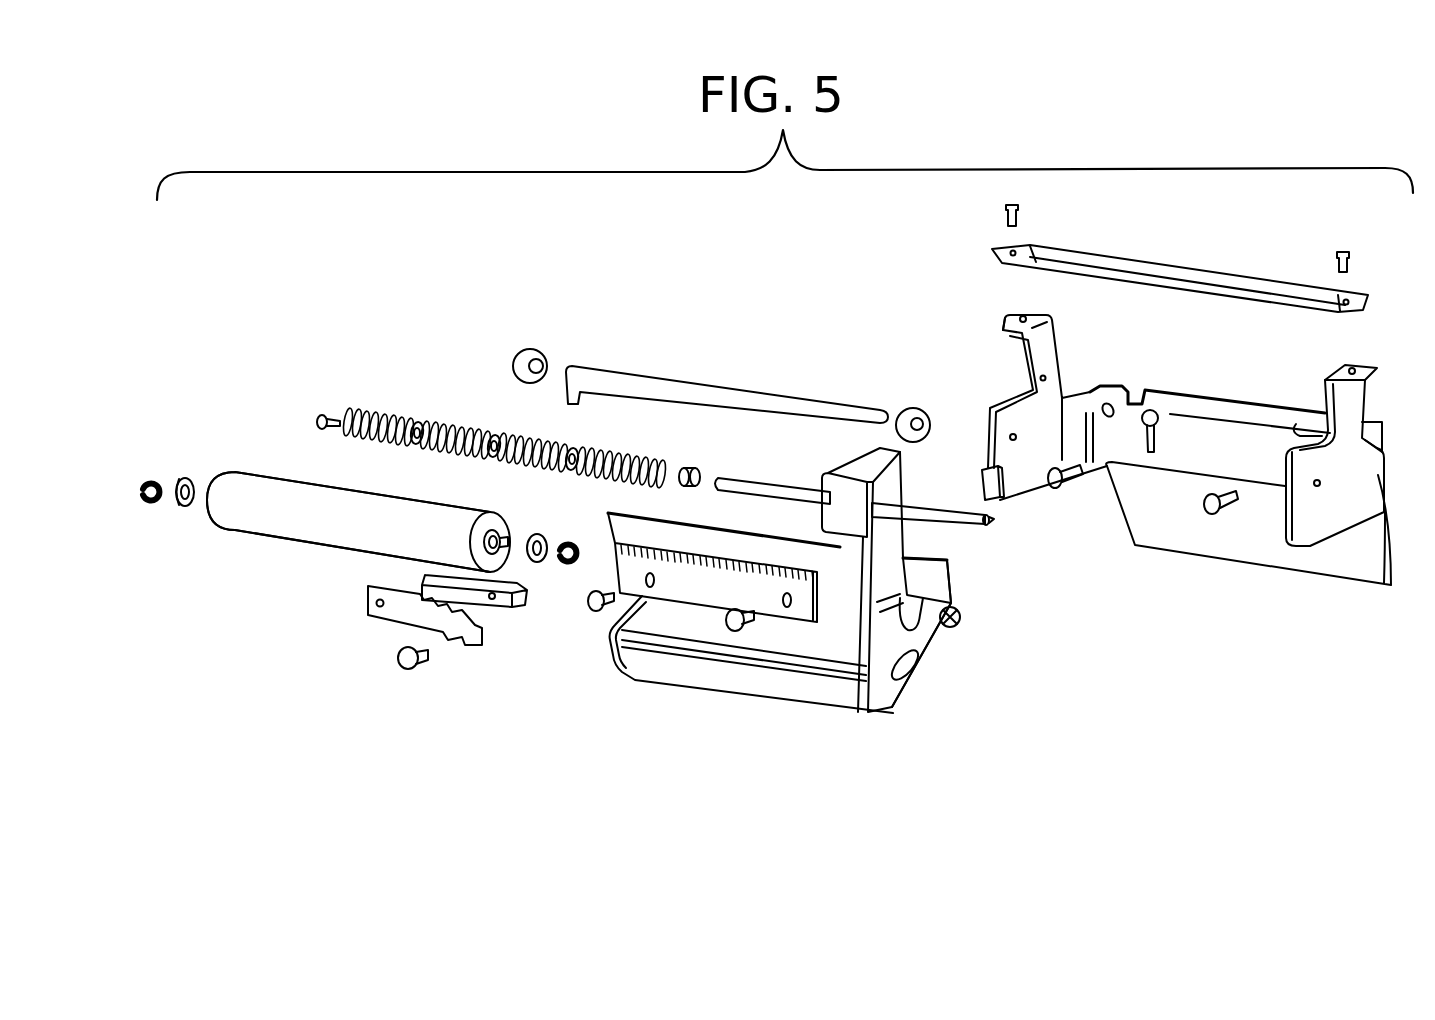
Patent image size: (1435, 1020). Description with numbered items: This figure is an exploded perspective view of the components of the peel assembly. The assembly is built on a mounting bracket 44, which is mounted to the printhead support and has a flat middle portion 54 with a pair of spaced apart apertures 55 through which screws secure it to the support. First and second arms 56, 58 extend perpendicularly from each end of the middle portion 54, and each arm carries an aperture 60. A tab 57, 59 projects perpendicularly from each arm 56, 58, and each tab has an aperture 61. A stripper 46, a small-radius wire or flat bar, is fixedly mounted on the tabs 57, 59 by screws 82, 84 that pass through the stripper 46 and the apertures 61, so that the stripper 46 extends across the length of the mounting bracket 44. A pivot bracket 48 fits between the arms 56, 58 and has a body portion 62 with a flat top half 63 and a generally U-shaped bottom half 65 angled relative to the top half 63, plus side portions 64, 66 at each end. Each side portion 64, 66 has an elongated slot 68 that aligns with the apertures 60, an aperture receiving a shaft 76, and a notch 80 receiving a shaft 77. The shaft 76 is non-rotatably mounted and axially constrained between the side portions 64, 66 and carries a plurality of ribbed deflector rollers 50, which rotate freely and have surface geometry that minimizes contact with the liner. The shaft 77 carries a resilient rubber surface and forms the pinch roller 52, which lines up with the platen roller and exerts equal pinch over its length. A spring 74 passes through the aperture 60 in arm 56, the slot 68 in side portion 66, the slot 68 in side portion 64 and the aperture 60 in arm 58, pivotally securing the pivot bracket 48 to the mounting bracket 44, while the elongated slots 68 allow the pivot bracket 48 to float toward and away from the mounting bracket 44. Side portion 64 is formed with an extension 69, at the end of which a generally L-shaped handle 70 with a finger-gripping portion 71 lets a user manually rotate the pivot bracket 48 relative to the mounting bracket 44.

The mounting bracket 44 is at (1340, 562).
The stripper 46 is at (1198, 282).
The pivot bracket 48 is at (932, 640).
The ribbed deflector rollers 50 is at (628, 450).
The pinch roller 52 is at (322, 528).
The flat middle portion 54 is at (1220, 435).
The apertures 55 is at (1148, 412).
The first arm 56 is at (1062, 364).
The tab 57 is at (1008, 320).
The second arm 58 is at (1368, 402).
The tab 59 is at (1378, 372).
The aperture 60 is at (1017, 438).
The aperture 61 is at (1020, 313).
The body portion 62 is at (688, 676).
The top half 63 is at (747, 546).
The side portion 64 is at (926, 668).
The bottom half 65 is at (831, 651).
The side portion 66 is at (606, 640).
The elongated slot 68 is at (906, 675).
The extension 69 is at (888, 542).
The handle 70 is at (888, 478).
The finger-gripping portion 71 is at (821, 495).
The spring 74 is at (705, 386).
The shaft 76 is at (750, 483).
The shaft 77 is at (499, 540).
The notch 80 is at (958, 620).
The screw 82 is at (1005, 215).
The screw 84 is at (1351, 265).